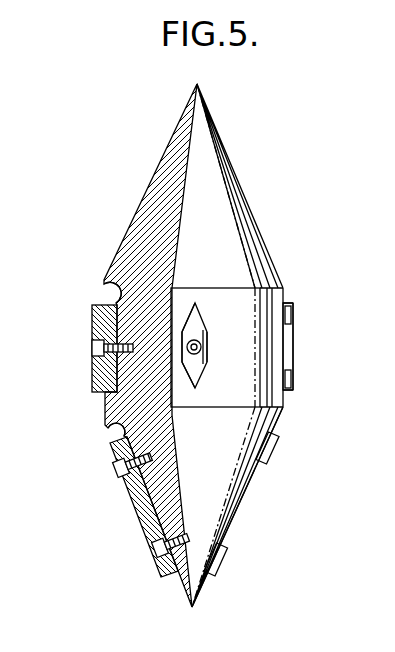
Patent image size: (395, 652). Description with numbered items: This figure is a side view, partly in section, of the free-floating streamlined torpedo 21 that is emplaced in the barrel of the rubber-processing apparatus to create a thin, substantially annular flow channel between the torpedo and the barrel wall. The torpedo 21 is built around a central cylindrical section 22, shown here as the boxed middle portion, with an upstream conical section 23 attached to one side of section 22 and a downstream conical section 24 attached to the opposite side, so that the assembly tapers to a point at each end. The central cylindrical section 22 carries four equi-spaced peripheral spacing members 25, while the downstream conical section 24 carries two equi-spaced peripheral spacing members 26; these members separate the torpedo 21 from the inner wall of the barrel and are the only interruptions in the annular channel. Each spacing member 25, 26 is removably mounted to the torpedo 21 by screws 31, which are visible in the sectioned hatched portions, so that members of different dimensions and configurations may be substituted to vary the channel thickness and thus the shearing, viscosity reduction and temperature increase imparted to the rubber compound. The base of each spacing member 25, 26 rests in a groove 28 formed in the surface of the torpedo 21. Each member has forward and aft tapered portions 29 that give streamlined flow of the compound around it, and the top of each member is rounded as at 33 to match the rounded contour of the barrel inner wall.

The torpedo 21 is at (145, 198).
The central cylindrical section 22 is at (268, 292).
The upstream conical section 23 is at (226, 180).
The downstream conical section 24 is at (268, 418).
The peripheral spacing members 25 is at (210, 346).
The peripheral spacing members 26 is at (137, 512).
The groove 28 is at (114, 283).
The tapered portions 29 is at (199, 338).
The screws 31 is at (203, 342).
The rounded top 33 is at (200, 362).